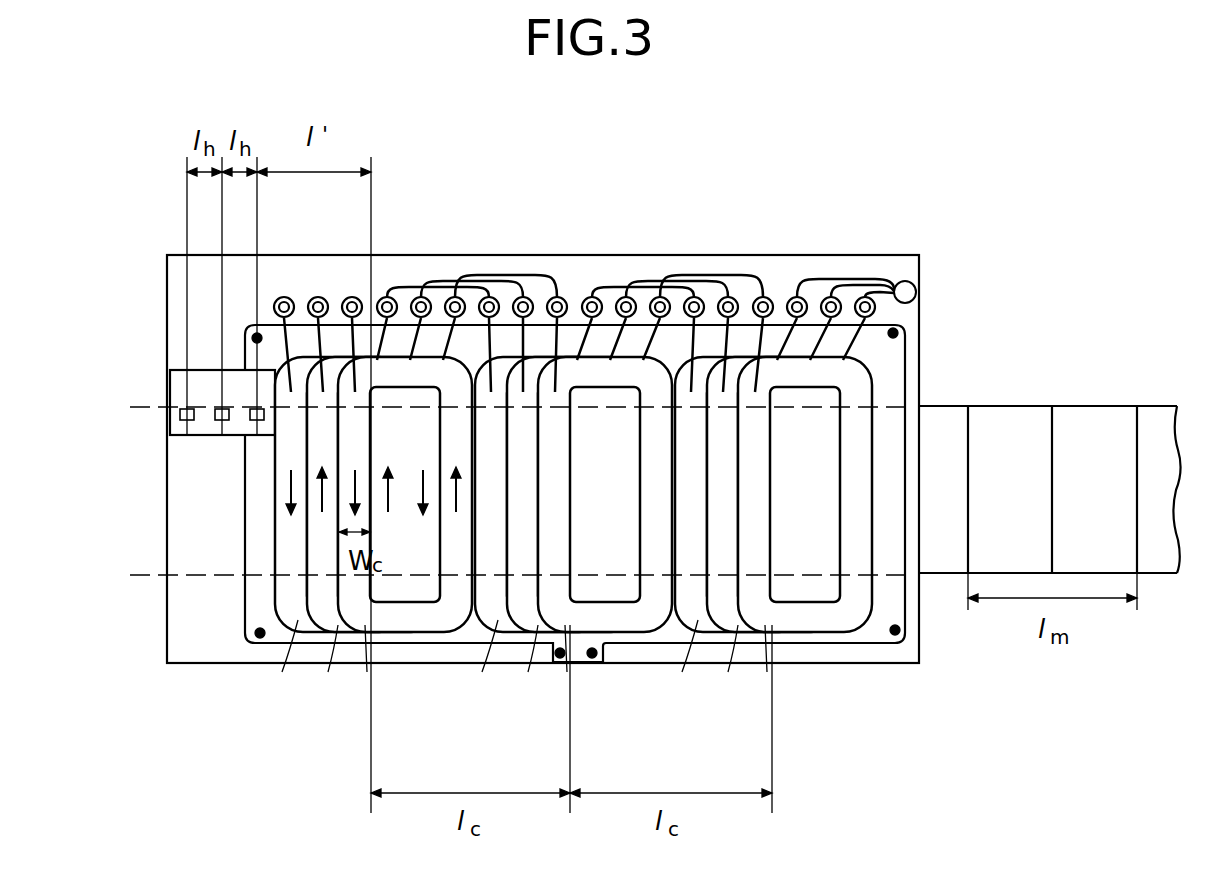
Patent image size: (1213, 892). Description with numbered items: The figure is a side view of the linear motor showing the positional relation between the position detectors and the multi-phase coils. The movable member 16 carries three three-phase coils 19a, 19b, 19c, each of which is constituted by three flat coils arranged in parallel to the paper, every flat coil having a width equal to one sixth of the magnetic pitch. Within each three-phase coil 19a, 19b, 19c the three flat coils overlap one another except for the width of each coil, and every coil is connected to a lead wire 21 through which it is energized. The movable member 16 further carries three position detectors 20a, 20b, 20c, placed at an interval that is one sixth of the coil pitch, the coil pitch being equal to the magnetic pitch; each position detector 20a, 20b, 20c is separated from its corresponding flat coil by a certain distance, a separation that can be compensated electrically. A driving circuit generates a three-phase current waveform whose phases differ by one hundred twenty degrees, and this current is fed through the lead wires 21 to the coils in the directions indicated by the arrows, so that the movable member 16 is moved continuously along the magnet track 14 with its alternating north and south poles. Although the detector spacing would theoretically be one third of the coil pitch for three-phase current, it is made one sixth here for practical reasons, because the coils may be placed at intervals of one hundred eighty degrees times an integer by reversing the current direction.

The permanent magnet track 14 is at (1020, 405).
The movable member 16 is at (822, 237).
The three-phase coil 19a is at (255, 707).
The three-phase coil 19b is at (455, 707).
The three-phase coil 19c is at (655, 707).
The position detector 20a is at (180, 421).
The position detector 20b is at (215, 421).
The position detector 20c is at (250, 421).
The lead wire 21 is at (512, 278).